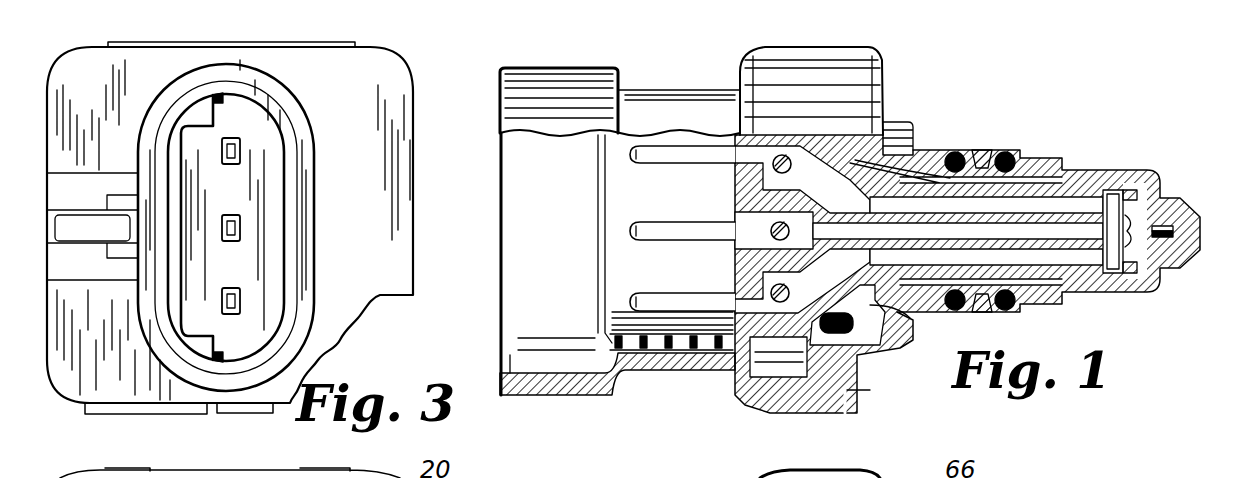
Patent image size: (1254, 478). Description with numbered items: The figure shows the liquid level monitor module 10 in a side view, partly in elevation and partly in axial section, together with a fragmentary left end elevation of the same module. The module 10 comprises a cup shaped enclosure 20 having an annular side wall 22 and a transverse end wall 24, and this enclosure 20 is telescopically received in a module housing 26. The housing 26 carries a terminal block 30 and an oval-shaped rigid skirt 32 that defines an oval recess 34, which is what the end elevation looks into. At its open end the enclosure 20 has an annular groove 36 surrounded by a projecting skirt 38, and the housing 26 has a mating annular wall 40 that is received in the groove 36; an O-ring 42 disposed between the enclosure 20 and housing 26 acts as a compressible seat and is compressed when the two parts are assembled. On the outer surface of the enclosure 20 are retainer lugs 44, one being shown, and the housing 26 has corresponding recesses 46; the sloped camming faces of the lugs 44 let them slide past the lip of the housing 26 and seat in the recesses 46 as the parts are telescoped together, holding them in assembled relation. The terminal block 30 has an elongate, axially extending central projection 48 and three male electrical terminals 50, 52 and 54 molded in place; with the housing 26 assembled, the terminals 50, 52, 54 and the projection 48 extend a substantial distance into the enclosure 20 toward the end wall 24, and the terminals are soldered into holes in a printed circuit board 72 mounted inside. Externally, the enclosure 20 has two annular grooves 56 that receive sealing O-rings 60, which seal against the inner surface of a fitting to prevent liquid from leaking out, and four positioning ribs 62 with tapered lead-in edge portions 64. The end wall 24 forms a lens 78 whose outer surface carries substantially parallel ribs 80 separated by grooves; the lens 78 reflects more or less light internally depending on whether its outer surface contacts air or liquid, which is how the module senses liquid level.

In FIG. 1, the module 10 is at (1094, 107).
In FIG. 1, the cup shaped enclosure 20 is at (1155, 305).
In FIG. 1, the annular side wall 22 is at (1094, 305).
In FIG. 1, the transverse end wall 24 is at (1163, 183).
In FIG. 3, the module housing 26 is at (373, 83).
In FIG. 1, the module housing 26 is at (679, 380).
In FIG. 1, the terminal block 30 is at (735, 268).
In FIG. 3, the oval-shaped rigid skirt 32 is at (300, 262).
In FIG. 1, the oval-shaped rigid skirt 32 is at (560, 395).
In FIG. 3, the oval recess 34 is at (200, 98).
In FIG. 1, the oval recess 34 is at (484, 337).
In FIG. 1, the annular groove 36 is at (888, 343).
In FIG. 1, the projecting skirt 38 is at (787, 413).
In FIG. 1, the annular wall 40 is at (873, 340).
In FIG. 1, the O-ring 42 is at (830, 295).
In FIG. 1, the retainer lug 44 is at (840, 416).
In FIG. 1, the recess 46 is at (833, 413).
In FIG. 1, the central projection 48 is at (1040, 205).
In FIG. 3, the electrical terminal 50 is at (243, 303).
In FIG. 1, the electrical terminal 50 is at (632, 303).
In FIG. 3, the electrical terminal 52 is at (243, 227).
In FIG. 1, the electrical terminal 52 is at (632, 231).
In FIG. 3, the electrical terminal 54 is at (243, 147).
In FIG. 1, the electrical terminal 54 is at (632, 153).
In FIG. 1, the external annular groove 56 is at (977, 155).
In FIG. 1, the sealing O-ring 60 is at (953, 152).
In FIG. 1, the positioning rib 62 is at (1105, 170).
In FIG. 1, the tapered lead-in edge portion 64 is at (1133, 165).
In FIG. 1, the printed circuit board 72 is at (1160, 288).
In FIG. 1, the lens formation 78 is at (1190, 262).
In FIG. 1, the rib 80 is at (1203, 230).